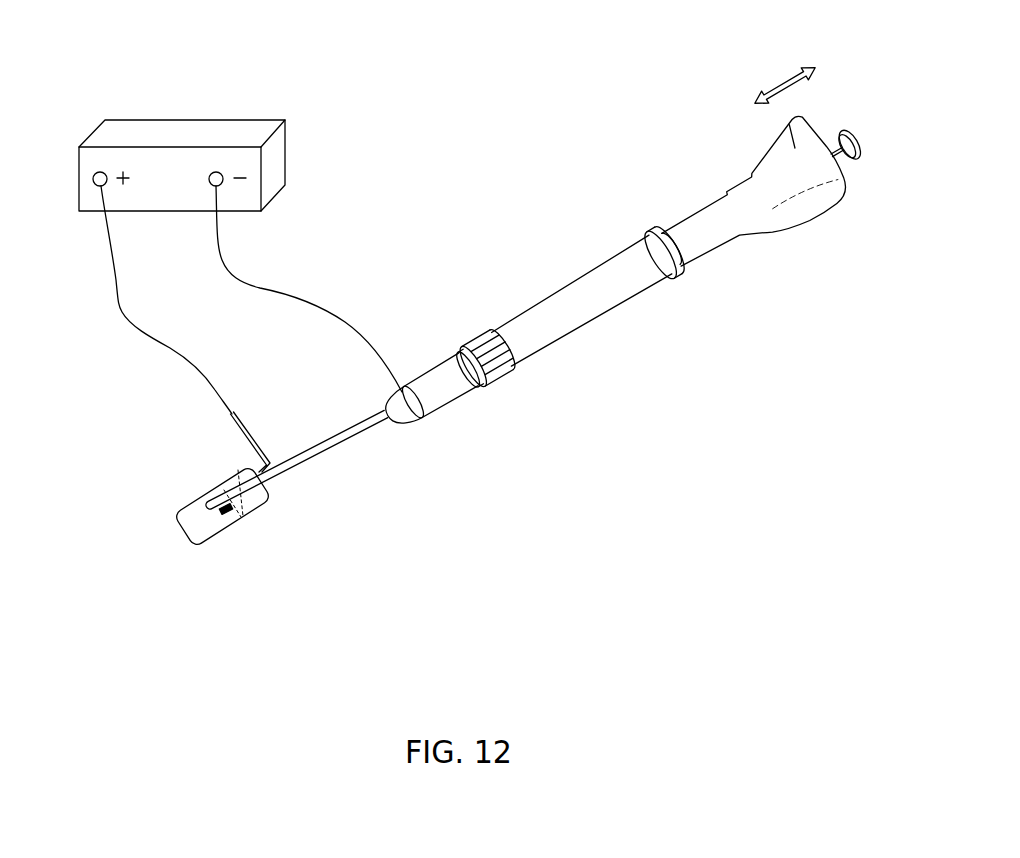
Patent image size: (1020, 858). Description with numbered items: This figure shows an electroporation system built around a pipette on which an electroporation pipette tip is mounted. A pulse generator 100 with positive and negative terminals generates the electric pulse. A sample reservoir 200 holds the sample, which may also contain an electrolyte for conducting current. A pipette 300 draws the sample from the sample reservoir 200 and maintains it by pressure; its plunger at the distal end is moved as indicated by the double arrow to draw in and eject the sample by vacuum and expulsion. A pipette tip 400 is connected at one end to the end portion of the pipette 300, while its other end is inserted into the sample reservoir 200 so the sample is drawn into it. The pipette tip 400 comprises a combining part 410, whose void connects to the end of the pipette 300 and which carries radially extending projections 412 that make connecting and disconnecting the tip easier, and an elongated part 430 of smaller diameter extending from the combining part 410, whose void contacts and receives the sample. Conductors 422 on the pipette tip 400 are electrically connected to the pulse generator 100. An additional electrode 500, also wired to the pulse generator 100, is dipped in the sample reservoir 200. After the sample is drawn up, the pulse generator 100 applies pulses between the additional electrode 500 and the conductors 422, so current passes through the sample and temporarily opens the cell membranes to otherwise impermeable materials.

The pulse generator 100 is at (197, 128).
The sample reservoir 200 is at (220, 540).
The pipette 300 is at (592, 282).
The pipette tip 400 is at (378, 427).
The combining part 410 is at (447, 393).
The projections 412 is at (498, 378).
The conductors 422 is at (413, 413).
The elongated part 430 is at (313, 464).
The additional electrode 500 is at (240, 468).